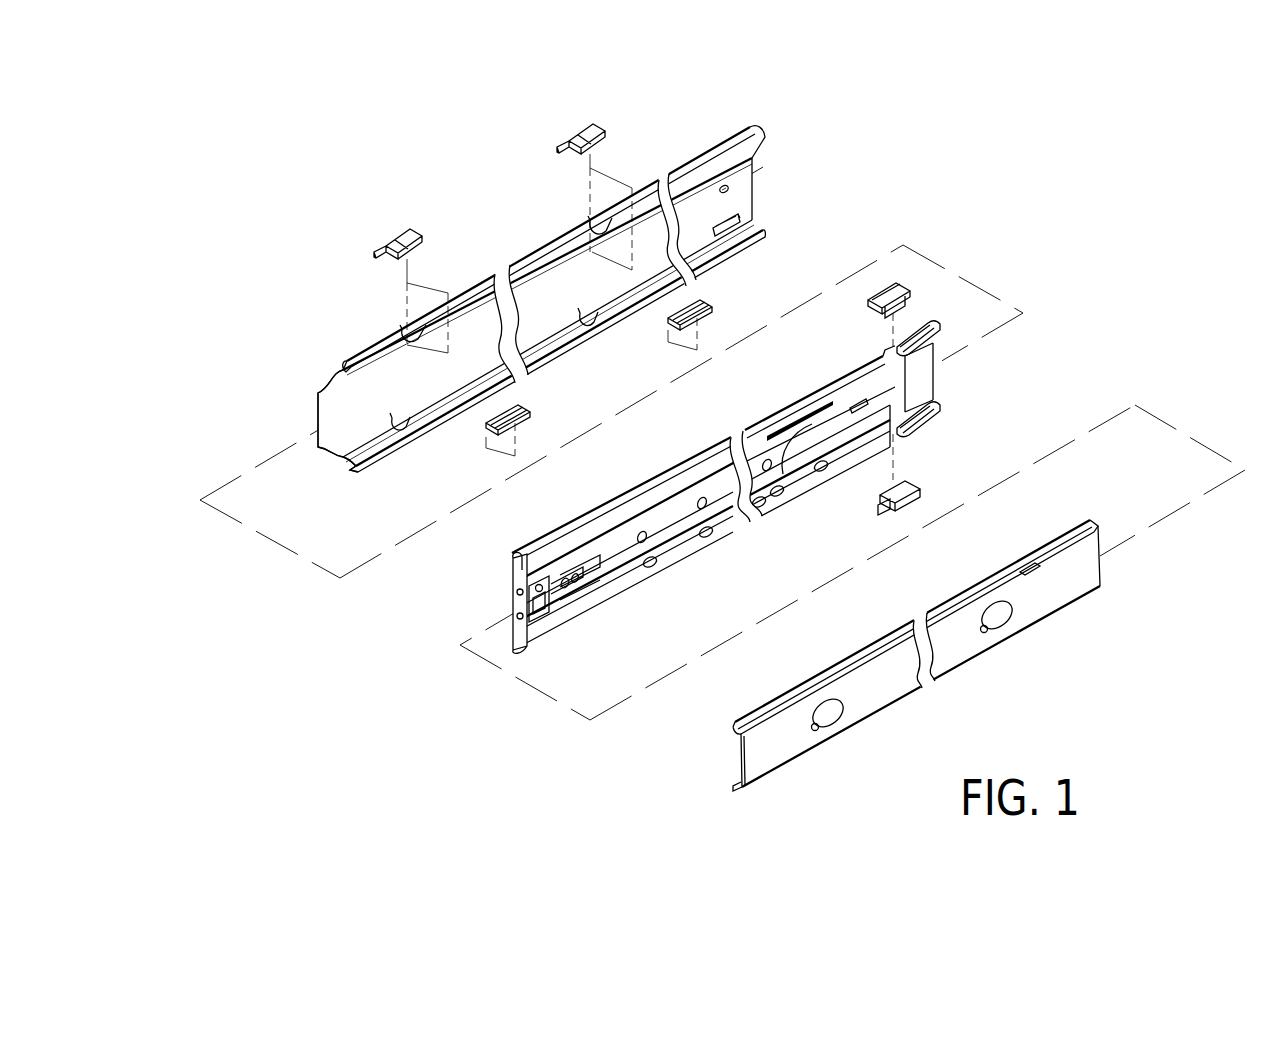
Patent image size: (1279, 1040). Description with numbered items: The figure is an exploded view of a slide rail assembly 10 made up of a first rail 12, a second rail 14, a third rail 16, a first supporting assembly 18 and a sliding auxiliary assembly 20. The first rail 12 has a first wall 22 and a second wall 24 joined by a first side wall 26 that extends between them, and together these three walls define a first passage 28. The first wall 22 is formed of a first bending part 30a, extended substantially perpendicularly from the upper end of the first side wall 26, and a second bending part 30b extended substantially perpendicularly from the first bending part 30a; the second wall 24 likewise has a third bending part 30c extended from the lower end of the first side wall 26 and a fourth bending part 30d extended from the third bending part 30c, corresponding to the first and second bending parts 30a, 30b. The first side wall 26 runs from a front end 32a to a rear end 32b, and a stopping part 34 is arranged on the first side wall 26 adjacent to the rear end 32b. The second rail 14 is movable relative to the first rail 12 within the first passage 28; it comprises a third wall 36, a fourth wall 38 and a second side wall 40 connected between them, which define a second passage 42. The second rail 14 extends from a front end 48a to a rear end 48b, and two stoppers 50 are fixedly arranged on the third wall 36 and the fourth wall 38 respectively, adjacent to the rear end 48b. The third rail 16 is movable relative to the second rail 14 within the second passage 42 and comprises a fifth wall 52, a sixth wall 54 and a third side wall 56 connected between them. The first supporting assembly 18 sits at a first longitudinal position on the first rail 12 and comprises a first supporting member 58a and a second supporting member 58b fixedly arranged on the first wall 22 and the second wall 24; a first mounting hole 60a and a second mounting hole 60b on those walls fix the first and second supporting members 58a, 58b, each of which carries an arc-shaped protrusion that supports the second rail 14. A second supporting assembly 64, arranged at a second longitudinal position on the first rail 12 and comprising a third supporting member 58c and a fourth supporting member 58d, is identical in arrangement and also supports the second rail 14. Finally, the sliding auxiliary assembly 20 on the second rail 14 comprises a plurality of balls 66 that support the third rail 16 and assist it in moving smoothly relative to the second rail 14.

The slide rail assembly 10 is at (722, 441).
The first rail 12 is at (526, 333).
The second rail 14 is at (735, 488).
The third rail 16 is at (900, 666).
The first supporting assembly 18 is at (595, 169).
The sliding auxiliary assembly 20 is at (701, 529).
The first wall 22 is at (539, 249).
The second wall 24 is at (554, 374).
The first side wall 26 is at (526, 305).
The first passage 28 is at (526, 305).
The first bending part 30a is at (355, 358).
The second bending part 30b is at (397, 346).
The third bending part 30c is at (352, 462).
The fourth bending part 30d is at (397, 433).
The front end 32a is at (318, 422).
The rear end 32b is at (753, 165).
The stopping part 34 is at (745, 222).
The third wall 36 is at (705, 462).
The fourth wall 38 is at (711, 544).
The second side wall 40 is at (888, 368).
The second passage 42 is at (517, 643).
The front end 48a is at (517, 607).
The rear end 48b is at (934, 377).
The stoppers 50 is at (910, 288).
The fifth wall 52 is at (790, 698).
The sixth wall 54 is at (738, 786).
The third side wall 56 is at (763, 741).
The first supporting member 58a is at (580, 125).
The second supporting member 58b is at (712, 312).
The third supporting member 58c is at (395, 232).
The fourth supporting member 58d is at (530, 418).
The first mounting hole 60a is at (590, 221).
The second mounting hole 60b is at (597, 323).
The second supporting assembly 64 is at (412, 261).
The balls 66 is at (781, 497).